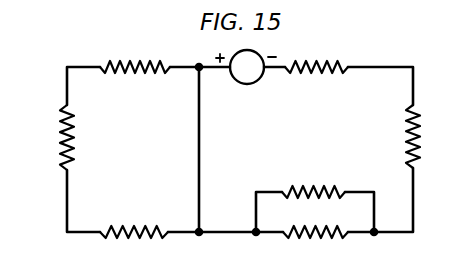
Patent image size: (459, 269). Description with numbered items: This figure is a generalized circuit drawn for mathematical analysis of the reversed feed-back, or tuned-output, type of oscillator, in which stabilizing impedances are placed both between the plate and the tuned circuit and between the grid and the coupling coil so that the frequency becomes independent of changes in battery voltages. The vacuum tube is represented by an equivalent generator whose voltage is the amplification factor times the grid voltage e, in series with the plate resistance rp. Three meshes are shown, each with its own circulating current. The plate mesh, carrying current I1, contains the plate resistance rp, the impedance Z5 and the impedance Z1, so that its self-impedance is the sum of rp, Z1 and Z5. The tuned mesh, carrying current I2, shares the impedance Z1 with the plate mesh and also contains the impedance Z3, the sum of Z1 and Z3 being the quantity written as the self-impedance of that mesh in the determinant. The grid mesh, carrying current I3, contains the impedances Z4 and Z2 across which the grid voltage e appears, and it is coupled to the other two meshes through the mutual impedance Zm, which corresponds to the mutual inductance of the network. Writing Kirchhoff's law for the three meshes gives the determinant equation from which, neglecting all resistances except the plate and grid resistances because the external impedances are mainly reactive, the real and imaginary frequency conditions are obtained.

The grid voltage e is at (184, 65).
The plate resistance rp is at (316, 57).
The impedance Z1 is at (315, 244).
The impedance Z2 is at (134, 222).
The impedance Z3 is at (313, 182).
The impedance Z4 is at (53, 137).
The impedance Z5 is at (400, 136).
The mutual impedance Zm is at (283, 236).
The plate mesh current I1 is at (335, 118).
The tuned mesh current I2 is at (335, 208).
The grid mesh current I3 is at (158, 127).